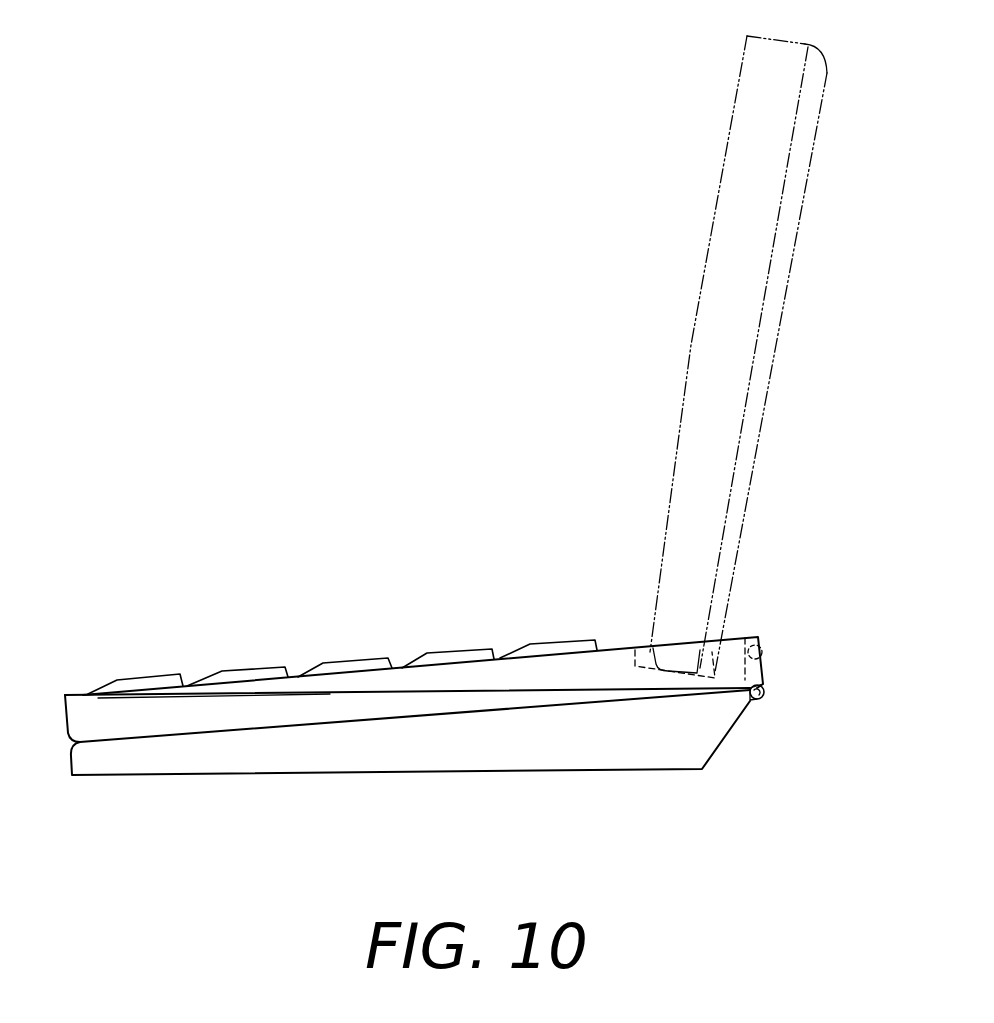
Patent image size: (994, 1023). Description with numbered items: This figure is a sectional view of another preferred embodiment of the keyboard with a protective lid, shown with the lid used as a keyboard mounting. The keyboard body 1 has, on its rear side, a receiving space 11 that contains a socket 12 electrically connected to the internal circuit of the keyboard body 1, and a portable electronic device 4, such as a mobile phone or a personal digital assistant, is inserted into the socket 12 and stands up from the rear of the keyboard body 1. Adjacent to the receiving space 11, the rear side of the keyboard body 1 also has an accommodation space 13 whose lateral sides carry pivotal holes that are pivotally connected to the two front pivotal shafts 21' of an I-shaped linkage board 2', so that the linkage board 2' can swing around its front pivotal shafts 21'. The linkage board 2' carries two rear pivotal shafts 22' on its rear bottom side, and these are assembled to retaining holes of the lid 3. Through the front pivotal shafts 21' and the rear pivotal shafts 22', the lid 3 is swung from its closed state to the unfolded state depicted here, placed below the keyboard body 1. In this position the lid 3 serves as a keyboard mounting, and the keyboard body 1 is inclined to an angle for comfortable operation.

The keyboard body 1 is at (313, 763).
The lid 3 is at (130, 712).
The portable electronic device 4 is at (697, 405).
The receiving space 11 is at (642, 653).
The socket 12 is at (720, 656).
The accommodation space 13 is at (750, 645).
The front pivotal shafts 21' is at (814, 636).
The I-shaped linkage board 2' is at (818, 685).
The rear pivotal shafts 22' is at (793, 735).